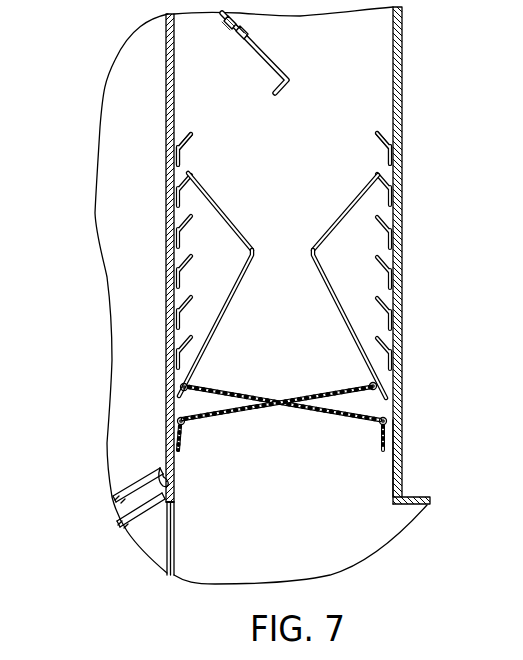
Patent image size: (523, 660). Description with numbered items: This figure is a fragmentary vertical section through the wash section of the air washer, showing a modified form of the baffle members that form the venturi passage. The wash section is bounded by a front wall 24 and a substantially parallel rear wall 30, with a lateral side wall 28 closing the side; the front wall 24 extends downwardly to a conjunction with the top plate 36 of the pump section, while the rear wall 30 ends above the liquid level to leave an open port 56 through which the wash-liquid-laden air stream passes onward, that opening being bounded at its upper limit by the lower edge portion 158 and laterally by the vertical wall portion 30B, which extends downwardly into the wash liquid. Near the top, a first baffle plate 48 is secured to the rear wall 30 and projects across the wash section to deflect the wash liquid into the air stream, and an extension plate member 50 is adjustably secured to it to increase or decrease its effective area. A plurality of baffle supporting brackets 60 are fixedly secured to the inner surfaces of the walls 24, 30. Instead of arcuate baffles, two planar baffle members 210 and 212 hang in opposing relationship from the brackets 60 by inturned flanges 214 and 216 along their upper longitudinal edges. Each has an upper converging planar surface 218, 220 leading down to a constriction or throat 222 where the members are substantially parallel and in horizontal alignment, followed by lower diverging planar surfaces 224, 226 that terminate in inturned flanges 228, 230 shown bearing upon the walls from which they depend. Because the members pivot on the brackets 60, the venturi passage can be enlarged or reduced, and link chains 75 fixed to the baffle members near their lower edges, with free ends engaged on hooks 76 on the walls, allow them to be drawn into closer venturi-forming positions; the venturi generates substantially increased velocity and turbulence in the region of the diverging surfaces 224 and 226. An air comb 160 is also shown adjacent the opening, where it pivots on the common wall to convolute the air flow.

The front wall 24 is at (398, 452).
The lateral side wall 28 is at (372, 59).
The rear wall 30 is at (186, 432).
The vertical wall portion 30B is at (174, 556).
The top plate 36 is at (418, 499).
The first baffle plate 48 is at (254, 33).
The extension plate member 50 is at (272, 63).
The port 56 is at (173, 510).
The baffle supporting brackets 60 is at (178, 258).
The link chains 75 is at (341, 418).
The hooks 76 is at (205, 413).
The lower edge portion 158 is at (170, 480).
The air comb 160 is at (133, 484).
The baffle member 210 is at (226, 269).
The baffle member 212 is at (339, 280).
The inturned flange 214 is at (170, 180).
The inturned flange 216 is at (397, 172).
The upper converging planar surface 218 is at (232, 222).
The upper converging planar surface 220 is at (331, 229).
The throat 222 is at (312, 252).
The lower diverging planar surface 224 is at (223, 312).
The lower diverging planar surface 226 is at (328, 284).
The inturned flange 228 is at (179, 387).
The inturned flange 230 is at (383, 380).